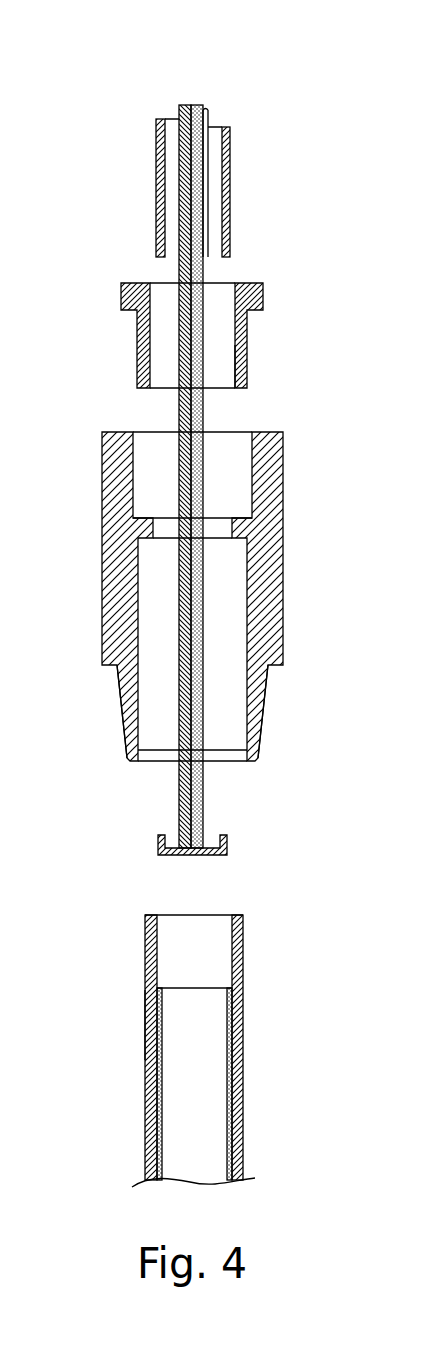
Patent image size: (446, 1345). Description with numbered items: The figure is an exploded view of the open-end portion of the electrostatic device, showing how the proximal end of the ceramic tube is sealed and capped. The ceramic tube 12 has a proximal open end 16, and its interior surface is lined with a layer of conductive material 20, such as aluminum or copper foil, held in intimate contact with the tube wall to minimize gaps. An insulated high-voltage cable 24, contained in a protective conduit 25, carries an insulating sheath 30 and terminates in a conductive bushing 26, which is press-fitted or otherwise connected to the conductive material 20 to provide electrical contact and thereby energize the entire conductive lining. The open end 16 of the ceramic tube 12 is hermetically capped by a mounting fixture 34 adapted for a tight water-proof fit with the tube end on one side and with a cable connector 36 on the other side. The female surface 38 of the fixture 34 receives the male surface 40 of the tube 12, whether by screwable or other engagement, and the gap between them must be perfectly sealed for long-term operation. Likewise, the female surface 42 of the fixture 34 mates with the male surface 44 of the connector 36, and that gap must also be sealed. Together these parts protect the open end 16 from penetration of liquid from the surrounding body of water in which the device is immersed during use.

The ceramic tube 12 is at (243, 1000).
The open end 16 is at (212, 915).
The conductive material 20 is at (163, 1077).
The high-voltage cable 24 is at (195, 105).
The protective conduit 25 is at (230, 185).
The conductive bushing 26 is at (227, 838).
The insulating sheath 30 is at (208, 116).
The mounting fixture 34 is at (283, 506).
The cable connector 36 is at (247, 342).
The female surface 38 is at (140, 713).
The male surface 40 is at (147, 1008).
The female surface 42 is at (134, 450).
The male surface 44 is at (233, 357).